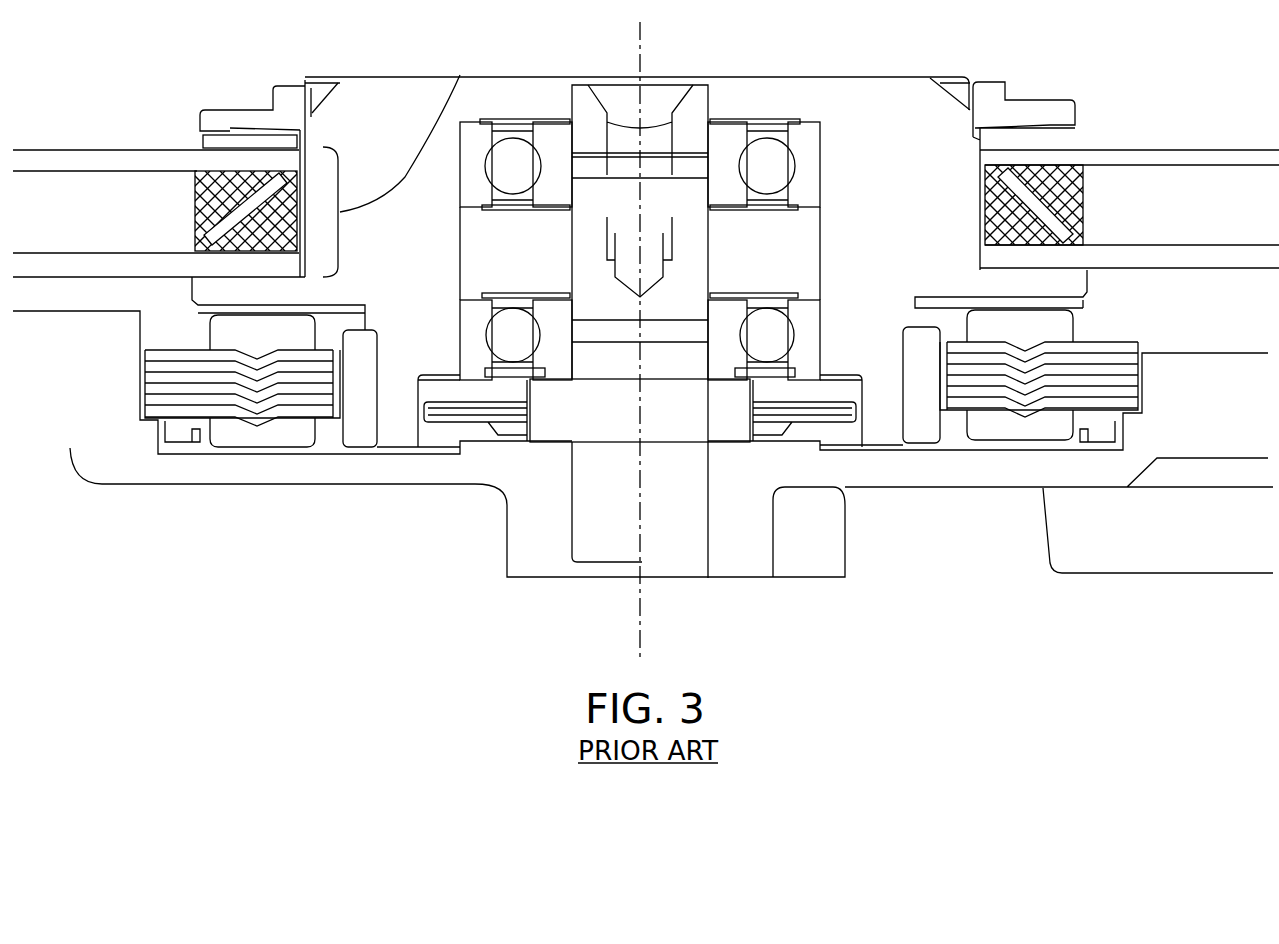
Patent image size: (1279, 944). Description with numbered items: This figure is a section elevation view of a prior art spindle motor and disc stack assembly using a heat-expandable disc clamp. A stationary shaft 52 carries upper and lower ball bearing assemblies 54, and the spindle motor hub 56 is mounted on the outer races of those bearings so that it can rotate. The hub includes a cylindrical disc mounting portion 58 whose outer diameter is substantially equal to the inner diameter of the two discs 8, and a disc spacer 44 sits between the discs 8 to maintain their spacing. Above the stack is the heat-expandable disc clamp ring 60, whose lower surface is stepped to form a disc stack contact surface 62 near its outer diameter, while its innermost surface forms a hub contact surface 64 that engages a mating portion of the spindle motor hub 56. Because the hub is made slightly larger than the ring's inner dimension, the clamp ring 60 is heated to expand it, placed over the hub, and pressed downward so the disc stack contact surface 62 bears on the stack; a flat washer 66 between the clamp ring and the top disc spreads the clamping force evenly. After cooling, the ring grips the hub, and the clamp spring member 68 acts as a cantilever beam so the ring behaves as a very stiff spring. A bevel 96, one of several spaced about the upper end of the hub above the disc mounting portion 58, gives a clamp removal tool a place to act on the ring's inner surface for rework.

The discs 8 is at (1143, 257).
The disc spacer 44 is at (1052, 213).
The stationary shaft 52 is at (693, 105).
The ball bearing assemblies 54 is at (807, 317).
The spindle motor hub 56 is at (918, 83).
The cylindrical disc mounting portion 58 is at (460, 75).
The disc clamp ring 60 is at (1033, 100).
The disc stack contact surface 62 is at (210, 133).
The hub contact surface 64 is at (306, 88).
The flat washer 66 is at (203, 141).
The clamp spring member 68 is at (248, 116).
The bevel 96 is at (336, 104).